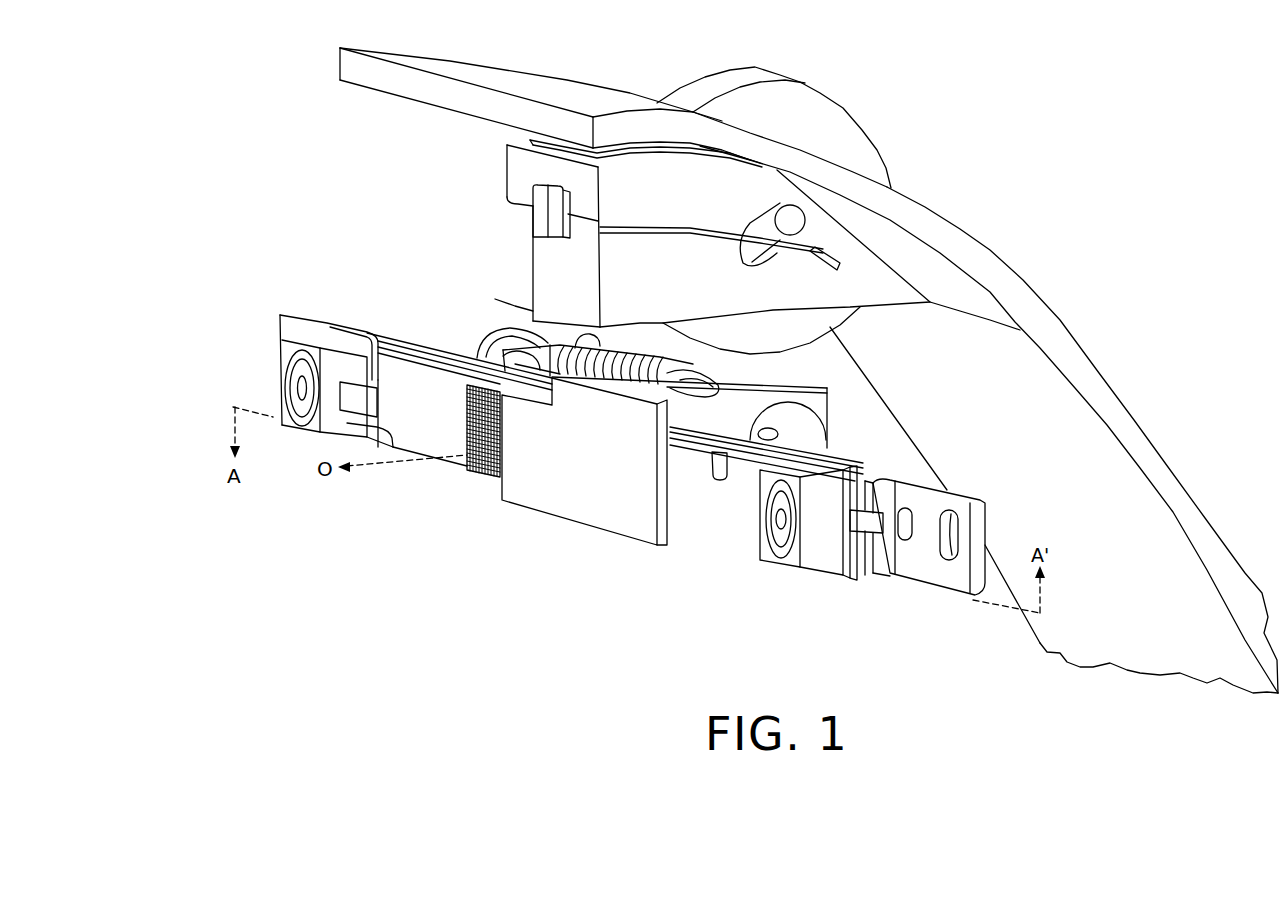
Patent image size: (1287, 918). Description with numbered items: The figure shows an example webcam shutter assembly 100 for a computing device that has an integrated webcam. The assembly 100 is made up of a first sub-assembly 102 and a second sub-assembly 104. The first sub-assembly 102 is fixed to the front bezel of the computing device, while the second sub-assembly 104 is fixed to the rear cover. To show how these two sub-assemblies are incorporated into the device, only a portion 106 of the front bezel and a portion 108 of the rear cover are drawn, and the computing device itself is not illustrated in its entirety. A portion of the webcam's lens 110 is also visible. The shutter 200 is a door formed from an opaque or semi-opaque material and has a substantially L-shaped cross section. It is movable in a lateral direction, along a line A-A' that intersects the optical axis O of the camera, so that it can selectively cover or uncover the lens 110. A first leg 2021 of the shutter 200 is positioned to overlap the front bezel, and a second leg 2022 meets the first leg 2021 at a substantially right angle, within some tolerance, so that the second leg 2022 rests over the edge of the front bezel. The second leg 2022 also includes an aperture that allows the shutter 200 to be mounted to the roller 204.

The webcam shutter assembly 100 is at (245, 135).
The first sub-assembly 102 is at (262, 357).
The second sub-assembly 104 is at (330, 57).
The portion of the front bezel 106 is at (430, 388).
The portion of the rear cover 108 is at (562, 78).
The lens 110 is at (473, 475).
The shutter 200 is at (598, 474).
The first leg 2021 is at (637, 525).
The second leg 2022 is at (820, 397).
The roller 204 is at (530, 318).